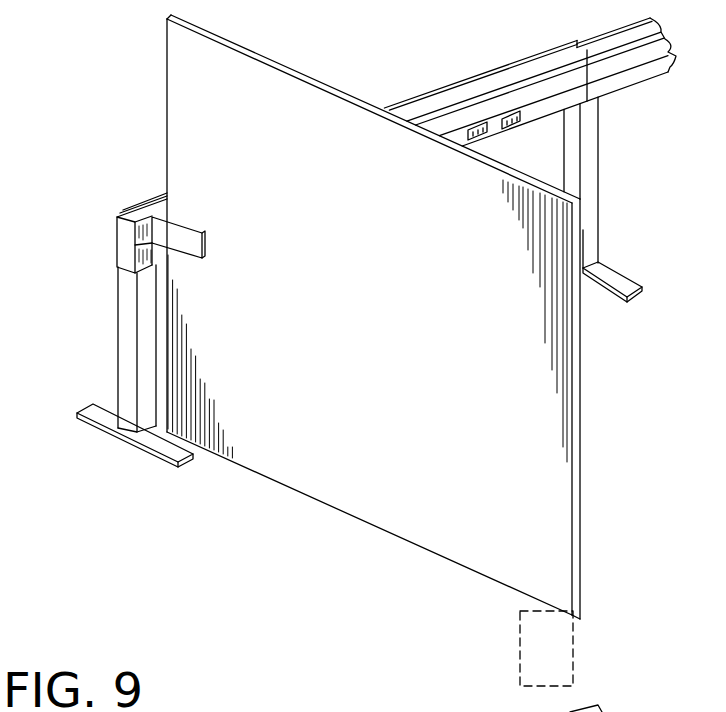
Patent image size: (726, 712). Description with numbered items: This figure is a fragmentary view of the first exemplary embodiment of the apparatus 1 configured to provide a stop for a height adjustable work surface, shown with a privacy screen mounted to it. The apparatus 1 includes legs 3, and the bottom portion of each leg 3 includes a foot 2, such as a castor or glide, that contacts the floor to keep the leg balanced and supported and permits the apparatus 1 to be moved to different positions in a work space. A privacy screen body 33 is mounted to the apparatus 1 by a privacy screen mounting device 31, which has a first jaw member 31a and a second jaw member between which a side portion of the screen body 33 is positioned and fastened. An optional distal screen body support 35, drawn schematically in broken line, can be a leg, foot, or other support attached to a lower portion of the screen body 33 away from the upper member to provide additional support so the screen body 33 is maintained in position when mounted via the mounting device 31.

The apparatus 1 is at (620, 186).
The foot 2 is at (618, 280).
The leg 3 is at (126, 383).
The privacy screen mounting device 31 is at (150, 208).
The first jaw member 31a is at (190, 250).
The privacy screen body 33 is at (385, 507).
The distal screen body support 35 is at (527, 656).